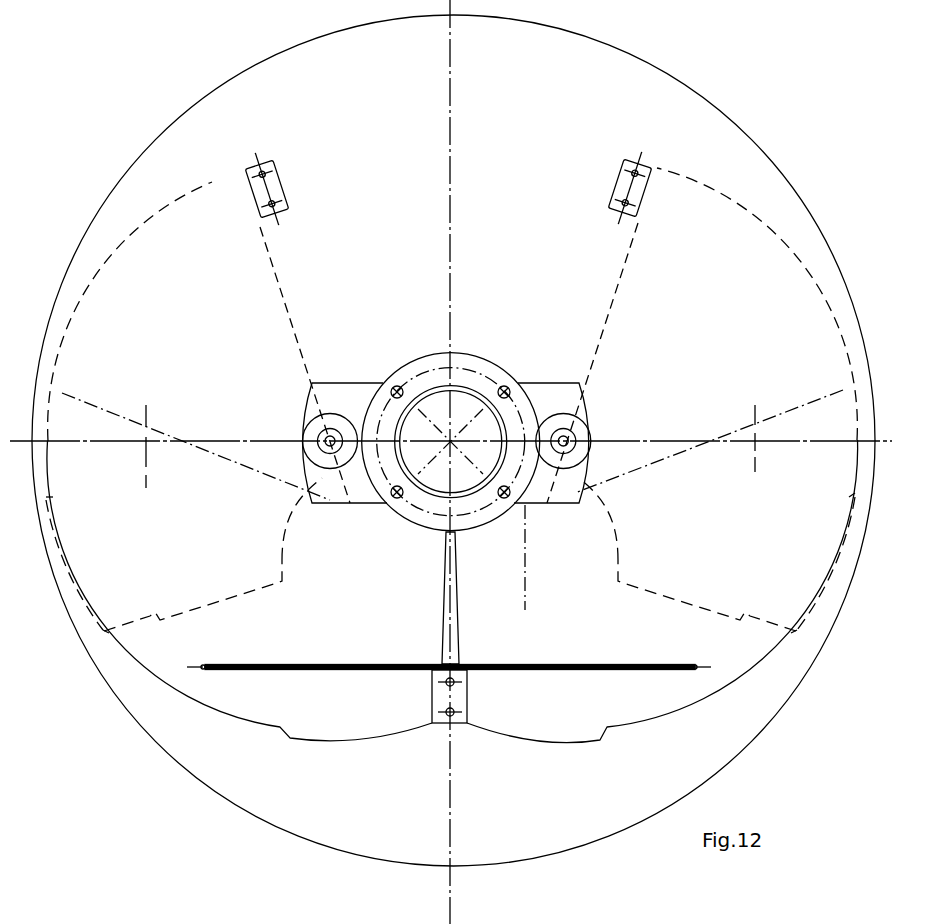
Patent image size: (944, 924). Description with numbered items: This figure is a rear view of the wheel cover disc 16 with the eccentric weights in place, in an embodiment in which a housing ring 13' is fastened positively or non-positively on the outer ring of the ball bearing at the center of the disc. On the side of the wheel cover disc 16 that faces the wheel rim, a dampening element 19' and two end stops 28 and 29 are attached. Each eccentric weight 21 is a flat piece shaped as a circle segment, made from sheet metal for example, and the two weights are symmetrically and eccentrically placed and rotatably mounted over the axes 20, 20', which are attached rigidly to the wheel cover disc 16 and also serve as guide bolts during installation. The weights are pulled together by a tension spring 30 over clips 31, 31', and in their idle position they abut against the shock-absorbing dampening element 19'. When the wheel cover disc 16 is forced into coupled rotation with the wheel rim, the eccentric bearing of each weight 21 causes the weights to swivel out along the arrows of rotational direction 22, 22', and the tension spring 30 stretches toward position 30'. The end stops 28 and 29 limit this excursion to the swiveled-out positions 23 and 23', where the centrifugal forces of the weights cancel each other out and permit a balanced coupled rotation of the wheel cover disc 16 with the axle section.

The housing ring 13' is at (451, 421).
The wheel cover disc 16 is at (563, 807).
The dampening element 19' is at (474, 749).
The axis 20 is at (300, 439).
The axis 20' is at (597, 439).
The eccentric weight 21 is at (330, 713).
The rotational direction arrow 22 is at (119, 450).
The rotational direction arrow 22' is at (785, 446).
The swiveled-out position 23 is at (317, 365).
The swiveled-out position 23' is at (577, 363).
The end stop 28 is at (277, 185).
The end stop 29 is at (618, 182).
The tension spring 30 is at (450, 601).
The stretched spring position 30' is at (527, 573).
The clip 31 is at (235, 640).
The clip 31' is at (666, 643).